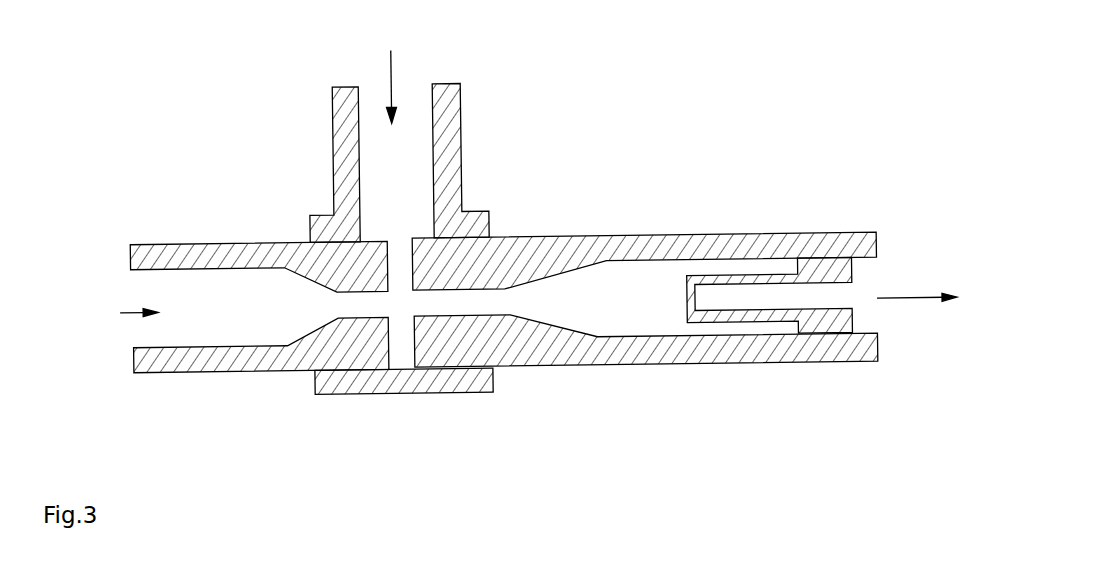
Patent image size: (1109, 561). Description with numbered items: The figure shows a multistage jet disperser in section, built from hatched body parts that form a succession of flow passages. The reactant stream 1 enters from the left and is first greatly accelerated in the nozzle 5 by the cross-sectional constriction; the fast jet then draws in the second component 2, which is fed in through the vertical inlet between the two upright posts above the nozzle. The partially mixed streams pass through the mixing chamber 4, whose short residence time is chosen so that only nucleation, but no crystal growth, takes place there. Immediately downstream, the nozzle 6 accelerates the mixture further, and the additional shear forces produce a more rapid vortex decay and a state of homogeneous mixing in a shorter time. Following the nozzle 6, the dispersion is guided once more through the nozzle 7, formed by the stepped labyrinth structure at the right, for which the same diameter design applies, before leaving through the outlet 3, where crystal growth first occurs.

The reactant stream 1 is at (197, 293).
The second component 2 is at (424, 134).
The outlet 3 is at (608, 288).
The mixing chamber 4 is at (399, 342).
The nozzle 5 is at (363, 300).
The nozzle 6 is at (440, 306).
The nozzle 7 is at (853, 261).